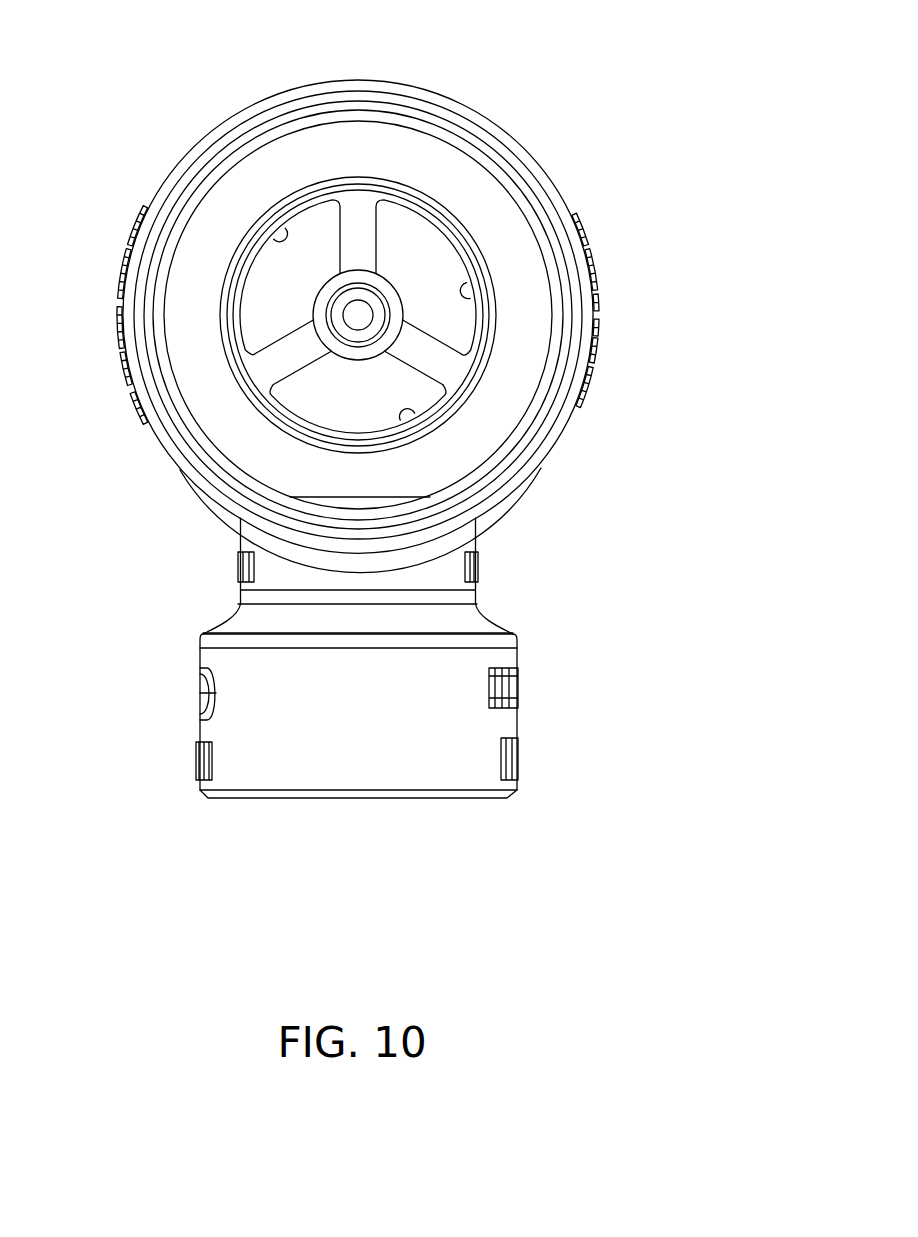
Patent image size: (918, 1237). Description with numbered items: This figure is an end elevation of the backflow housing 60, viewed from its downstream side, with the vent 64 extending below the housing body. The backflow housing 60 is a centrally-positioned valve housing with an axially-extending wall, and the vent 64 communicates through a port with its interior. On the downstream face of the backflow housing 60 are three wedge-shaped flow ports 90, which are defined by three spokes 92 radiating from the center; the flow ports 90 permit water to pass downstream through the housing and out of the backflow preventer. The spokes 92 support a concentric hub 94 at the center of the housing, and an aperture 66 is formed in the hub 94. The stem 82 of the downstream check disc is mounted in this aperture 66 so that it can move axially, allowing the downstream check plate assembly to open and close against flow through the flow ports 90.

The backflow housing 60 is at (520, 122).
The vent 64 is at (252, 725).
The aperture 66 is at (350, 308).
The stem 82 is at (390, 302).
The flow ports 90 is at (278, 236).
The spokes 92 is at (358, 208).
The hub 94 is at (383, 280).